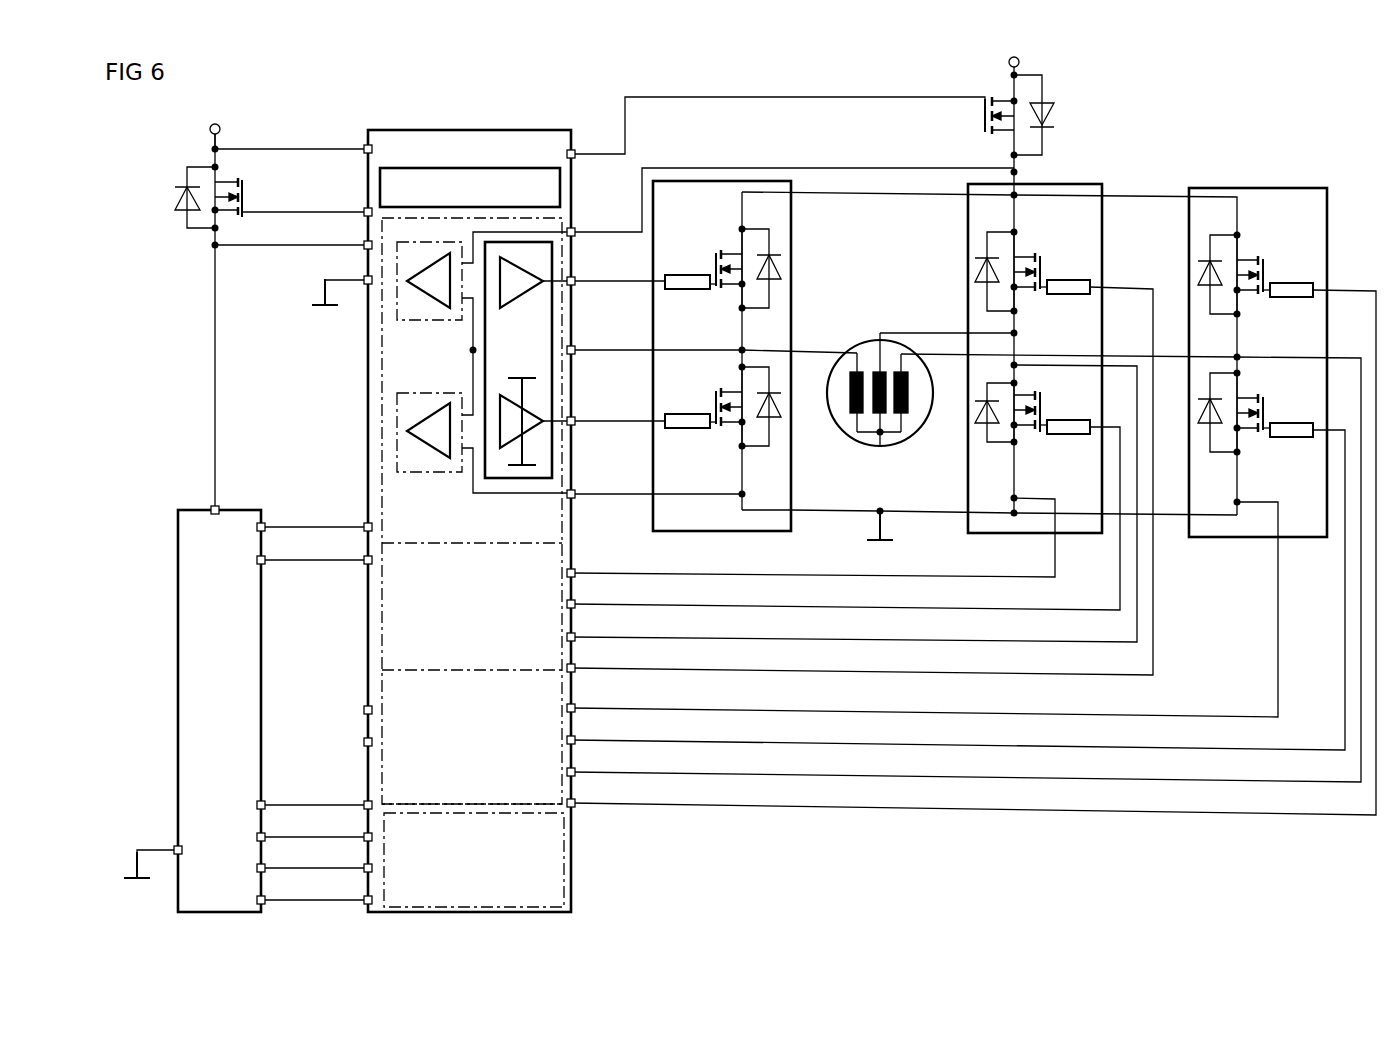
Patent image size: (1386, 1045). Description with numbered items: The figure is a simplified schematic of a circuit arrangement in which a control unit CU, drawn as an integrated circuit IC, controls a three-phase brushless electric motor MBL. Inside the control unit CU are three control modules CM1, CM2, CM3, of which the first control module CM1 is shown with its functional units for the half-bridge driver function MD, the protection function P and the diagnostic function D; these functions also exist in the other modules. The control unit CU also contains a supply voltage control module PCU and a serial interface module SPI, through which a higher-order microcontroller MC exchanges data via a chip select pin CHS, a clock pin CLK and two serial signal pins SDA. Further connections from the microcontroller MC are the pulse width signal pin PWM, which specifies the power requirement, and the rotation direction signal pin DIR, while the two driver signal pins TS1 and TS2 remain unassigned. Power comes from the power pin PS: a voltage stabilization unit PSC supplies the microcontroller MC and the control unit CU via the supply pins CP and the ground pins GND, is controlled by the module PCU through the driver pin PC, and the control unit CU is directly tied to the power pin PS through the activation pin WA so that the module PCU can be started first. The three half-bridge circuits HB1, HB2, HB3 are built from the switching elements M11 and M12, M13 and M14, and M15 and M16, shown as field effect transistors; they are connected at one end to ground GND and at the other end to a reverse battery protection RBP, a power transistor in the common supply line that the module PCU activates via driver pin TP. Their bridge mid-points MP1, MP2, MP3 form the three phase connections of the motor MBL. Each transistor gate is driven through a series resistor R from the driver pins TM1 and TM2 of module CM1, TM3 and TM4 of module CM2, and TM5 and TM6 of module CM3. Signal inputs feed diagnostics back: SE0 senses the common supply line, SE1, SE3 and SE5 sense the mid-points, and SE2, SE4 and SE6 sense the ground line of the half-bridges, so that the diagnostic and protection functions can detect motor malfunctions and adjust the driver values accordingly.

The integrated circuit IC is at (498, 521).
The control unit CU is at (573, 872).
The supply voltage control module PCU is at (470, 187).
The first control module CM1 is at (472, 526).
The second control module CM2 is at (472, 632).
The third control module CM3 is at (472, 766).
The interface module SPI is at (474, 860).
The diagnostic function D is at (425, 322).
The protection function P is at (425, 474).
The half-bridge driver function MD is at (528, 360).
The microcontroller MC is at (219, 711).
The voltage stabilization unit PSC is at (200, 238).
The power pin PS is at (614, 99).
The reverse battery protection RBP is at (1068, 115).
The ground pin GND is at (510, 596).
The driver pin TP is at (778, 125).
The activation pin WA is at (291, 135).
The driver pin PC is at (305, 198).
The supply pin CP is at (275, 361).
The pulse width signal pin PWM is at (314, 513).
The rotation direction signal pin DIR is at (314, 546).
The driver signal pin TS1 is at (331, 710).
The driver signal pin TS2 is at (331, 742).
The chip select pin CHS is at (314, 791).
The clock pin CLK is at (314, 823).
The serial signal pin SDA is at (314, 870).
The signal input SE0 is at (794, 200).
The signal input SE1 is at (714, 337).
The signal input SE2 is at (658, 482).
The signal input SE3 is at (854, 502).
The signal input SE4 is at (813, 536).
The signal input SE5 is at (966, 569).
The signal input SE6 is at (924, 608).
The driver pin TM1 is at (618, 267).
The driver pin TM2 is at (618, 407).
The driver pin TM3 is at (862, 481).
The driver pin TM4 is at (845, 518).
The driver pin TM5 is at (973, 552).
The driver pin TM6 is at (958, 590).
The first half-bridge circuit HB1 is at (763, 356).
The second half-bridge circuit HB2 is at (994, 352).
The third half-bridge circuit HB3 is at (1258, 333).
The first switching element M11 is at (728, 240).
The second switching element M12 is at (727, 433).
The third switching element M13 is at (1027, 248).
The fourth switching element M14 is at (1032, 437).
The fifth switching element M15 is at (1247, 257).
The sixth switching element M16 is at (1247, 428).
The series resistor R is at (688, 275).
The bridge mid-point MP1 is at (742, 350).
The bridge mid-point MP2 is at (1040, 340).
The bridge mid-point MP3 is at (1240, 357).
The brushless electric motor MBL is at (881, 447).